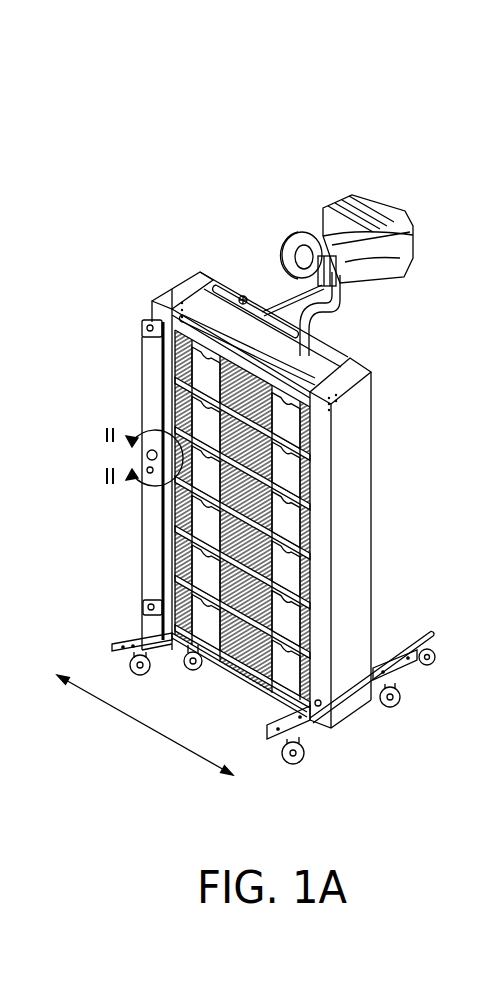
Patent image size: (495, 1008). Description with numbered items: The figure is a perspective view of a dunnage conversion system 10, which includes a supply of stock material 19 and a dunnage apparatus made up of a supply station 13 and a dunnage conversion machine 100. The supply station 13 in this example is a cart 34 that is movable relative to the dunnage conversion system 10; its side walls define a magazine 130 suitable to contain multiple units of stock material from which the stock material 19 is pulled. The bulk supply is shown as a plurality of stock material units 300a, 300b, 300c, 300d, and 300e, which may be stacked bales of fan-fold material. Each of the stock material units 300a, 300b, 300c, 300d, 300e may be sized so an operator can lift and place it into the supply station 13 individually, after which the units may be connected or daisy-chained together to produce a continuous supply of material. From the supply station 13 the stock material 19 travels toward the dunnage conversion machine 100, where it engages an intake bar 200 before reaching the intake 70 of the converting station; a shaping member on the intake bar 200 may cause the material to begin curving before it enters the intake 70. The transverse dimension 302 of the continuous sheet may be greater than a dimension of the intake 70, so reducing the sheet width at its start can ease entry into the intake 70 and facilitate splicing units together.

The dunnage conversion system 10 is at (412, 178).
The dunnage conversion machine 100 is at (368, 168).
The intake 70 is at (286, 232).
The intake bar 200 is at (233, 290).
The magazine 130 is at (178, 297).
The stock material unit 300a is at (303, 430).
The stock material unit 300b is at (303, 485).
The stock material unit 300c is at (303, 533).
The stock material unit 300d is at (303, 583).
The stock material unit 300e is at (303, 623).
The stock material 19 is at (245, 648).
The supply station 13 is at (343, 678).
The cart 34 is at (403, 668).
The transverse dimension 302 is at (143, 725).